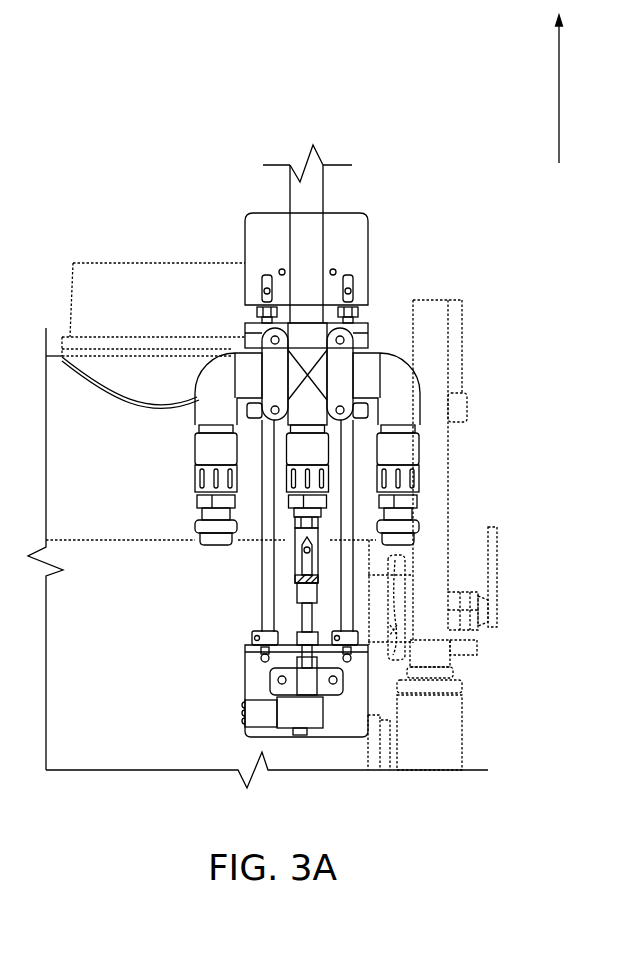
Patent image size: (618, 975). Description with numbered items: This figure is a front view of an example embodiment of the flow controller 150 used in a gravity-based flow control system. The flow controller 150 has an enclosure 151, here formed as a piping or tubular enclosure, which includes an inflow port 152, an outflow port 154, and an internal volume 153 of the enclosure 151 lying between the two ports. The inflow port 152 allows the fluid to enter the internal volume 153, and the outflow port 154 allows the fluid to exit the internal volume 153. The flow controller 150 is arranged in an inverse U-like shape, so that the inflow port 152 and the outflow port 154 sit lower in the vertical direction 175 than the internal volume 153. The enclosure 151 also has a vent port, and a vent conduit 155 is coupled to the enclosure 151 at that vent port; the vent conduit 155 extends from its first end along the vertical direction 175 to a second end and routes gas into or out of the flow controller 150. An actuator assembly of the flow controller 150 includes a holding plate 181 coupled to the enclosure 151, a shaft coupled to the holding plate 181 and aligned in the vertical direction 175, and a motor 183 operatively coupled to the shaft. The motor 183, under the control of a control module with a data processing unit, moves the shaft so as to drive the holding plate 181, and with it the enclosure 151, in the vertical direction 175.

The flow controller 150 is at (307, 132).
The enclosure 151 is at (188, 449).
The inflow port 152 is at (192, 547).
The internal volume 153 is at (372, 373).
The outflow port 154 is at (416, 554).
The vent conduit 155 is at (316, 196).
The vertical direction 175 is at (552, 85).
The holding plate 181 is at (378, 332).
The motor 183 is at (332, 723).